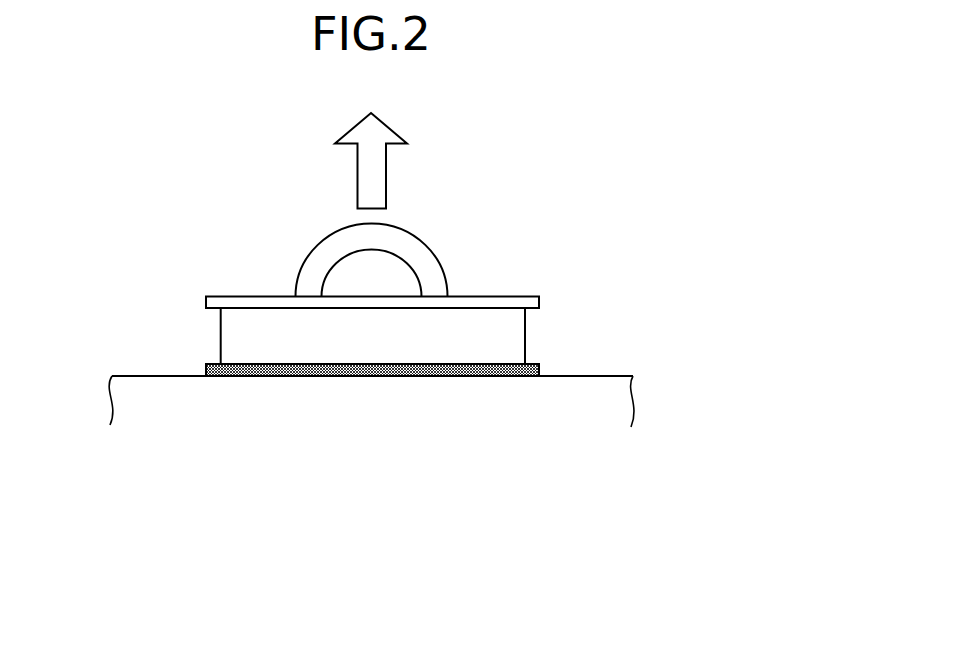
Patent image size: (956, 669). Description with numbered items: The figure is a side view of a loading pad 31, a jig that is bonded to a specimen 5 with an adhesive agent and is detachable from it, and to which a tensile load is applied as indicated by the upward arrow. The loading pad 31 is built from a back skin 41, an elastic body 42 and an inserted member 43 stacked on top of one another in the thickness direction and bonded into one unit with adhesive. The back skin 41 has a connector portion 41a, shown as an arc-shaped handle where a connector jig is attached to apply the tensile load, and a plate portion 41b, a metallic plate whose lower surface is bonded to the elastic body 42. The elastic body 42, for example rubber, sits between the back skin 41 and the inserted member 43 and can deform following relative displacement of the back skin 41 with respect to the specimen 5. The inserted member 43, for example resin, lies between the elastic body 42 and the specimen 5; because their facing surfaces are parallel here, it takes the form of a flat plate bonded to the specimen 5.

The loading pad 31 is at (502, 250).
The back skin 41 is at (349, 238).
The connector portion 41a is at (340, 225).
The plate portion 41b is at (266, 293).
The elastic body 42 is at (220, 330).
The inserted member 43 is at (206, 367).
The specimen 5 is at (595, 375).